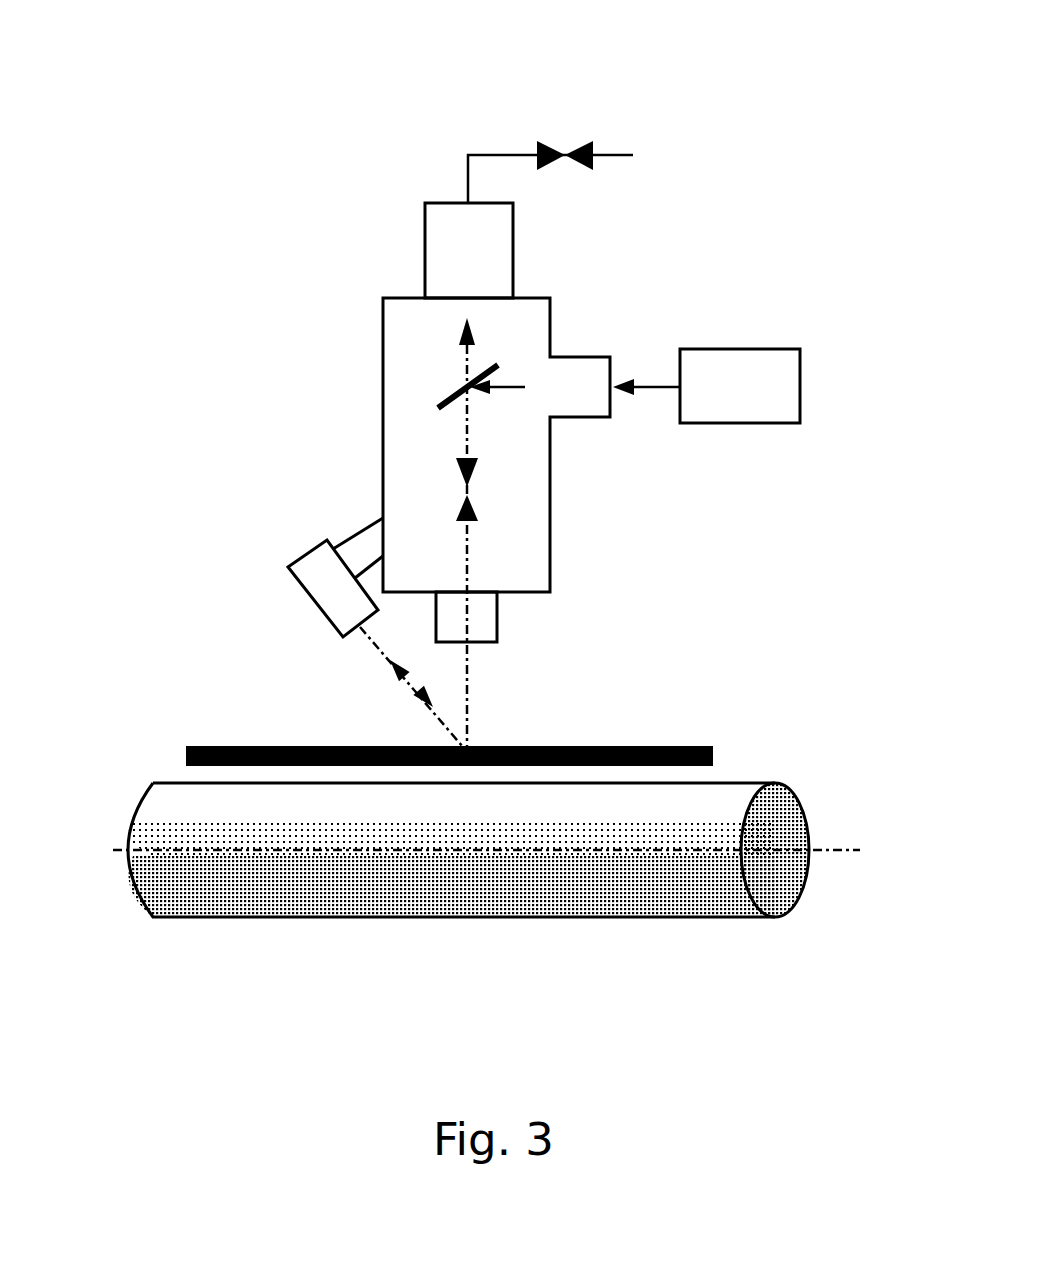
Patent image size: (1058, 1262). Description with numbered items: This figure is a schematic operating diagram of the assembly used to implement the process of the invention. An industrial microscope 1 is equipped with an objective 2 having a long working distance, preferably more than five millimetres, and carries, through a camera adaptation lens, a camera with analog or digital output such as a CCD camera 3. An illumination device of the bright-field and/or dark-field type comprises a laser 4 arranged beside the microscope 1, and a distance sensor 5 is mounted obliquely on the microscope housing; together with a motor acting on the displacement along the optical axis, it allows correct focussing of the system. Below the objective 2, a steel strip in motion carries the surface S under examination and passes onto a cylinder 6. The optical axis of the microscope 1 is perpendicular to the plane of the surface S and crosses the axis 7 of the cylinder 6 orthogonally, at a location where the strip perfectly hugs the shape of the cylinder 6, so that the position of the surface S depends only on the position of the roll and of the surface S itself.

The industrial microscope 1 is at (407, 443).
The objective 2 is at (482, 617).
The CCD camera 3 is at (445, 233).
The laser 4 is at (739, 387).
The distance sensor 5 is at (328, 583).
The cylinder 6 is at (467, 883).
The axis of the cylinder 7 is at (833, 856).
The surface S is at (660, 757).